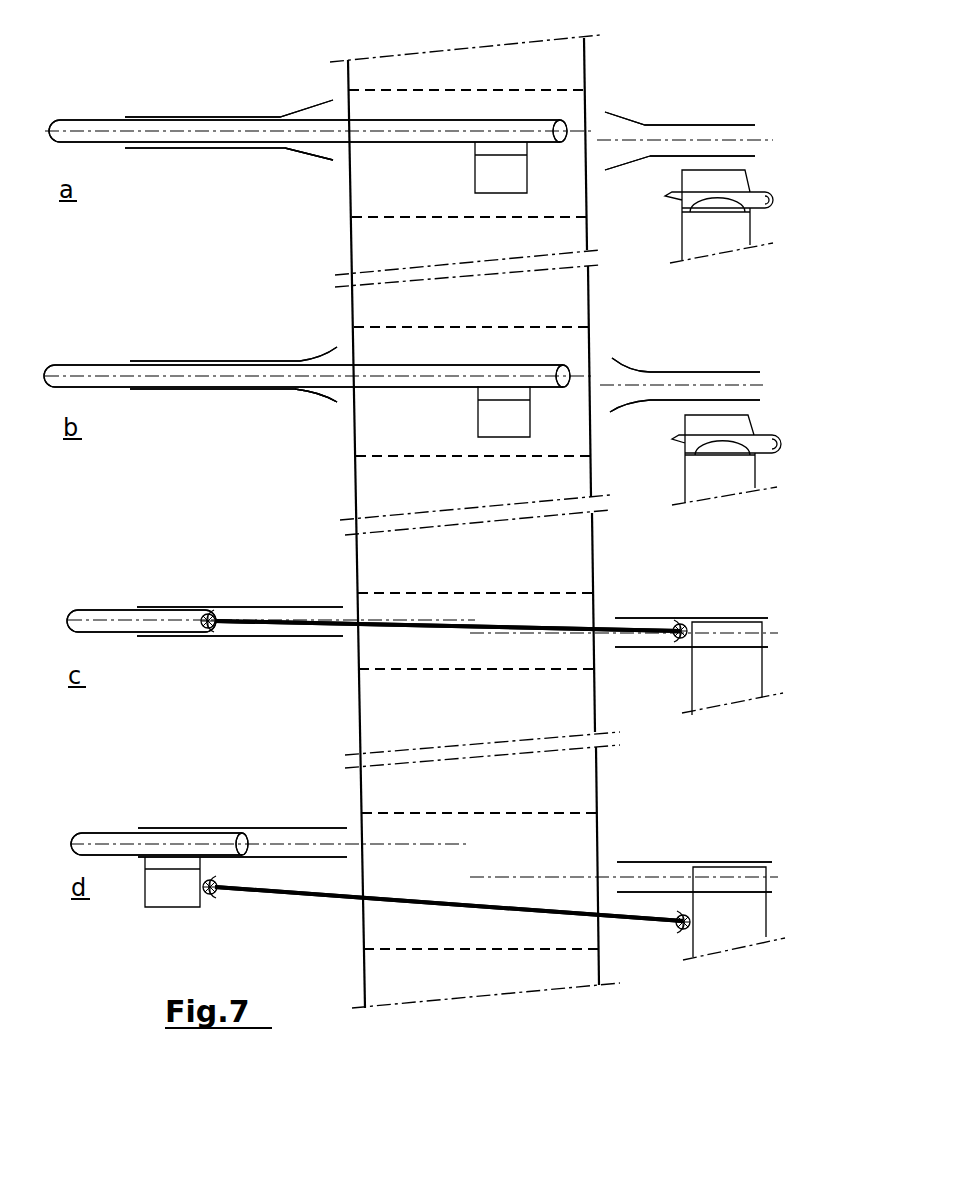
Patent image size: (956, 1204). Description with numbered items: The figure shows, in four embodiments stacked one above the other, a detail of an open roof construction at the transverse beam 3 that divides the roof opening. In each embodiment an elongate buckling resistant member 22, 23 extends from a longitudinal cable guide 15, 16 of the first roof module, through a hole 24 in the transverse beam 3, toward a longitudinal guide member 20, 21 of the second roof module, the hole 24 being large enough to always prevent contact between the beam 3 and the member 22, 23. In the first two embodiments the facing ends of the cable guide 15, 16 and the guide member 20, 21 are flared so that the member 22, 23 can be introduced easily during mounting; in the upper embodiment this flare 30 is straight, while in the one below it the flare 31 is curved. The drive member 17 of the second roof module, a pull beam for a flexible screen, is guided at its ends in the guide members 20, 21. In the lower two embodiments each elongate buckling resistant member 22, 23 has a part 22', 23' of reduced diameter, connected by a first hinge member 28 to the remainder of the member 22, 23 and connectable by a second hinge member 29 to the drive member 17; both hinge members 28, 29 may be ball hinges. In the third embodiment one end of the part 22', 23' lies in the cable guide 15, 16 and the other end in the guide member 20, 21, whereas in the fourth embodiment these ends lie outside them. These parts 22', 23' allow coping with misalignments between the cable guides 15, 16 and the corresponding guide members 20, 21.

The transverse beam 3 is at (352, 240).
The longitudinal cable guide 15 is at (228, 117).
The longitudinal cable guide 16 is at (236, 469).
The drive member 17 is at (688, 231).
The longitudinal guide member 20 is at (685, 125).
The longitudinal guide member 21 is at (694, 487).
The elongate buckling resistant member 22 is at (307, 468).
The elongate buckling resistant member 23 is at (307, 468).
The part with reduced diameter 22' is at (449, 771).
The part with reduced diameter 23' is at (449, 771).
The hole 24 is at (350, 90).
The first hinge member 28 is at (207, 612).
The second hinge member 29 is at (683, 622).
The flare 30 is at (305, 153).
The flare 31 is at (325, 396).